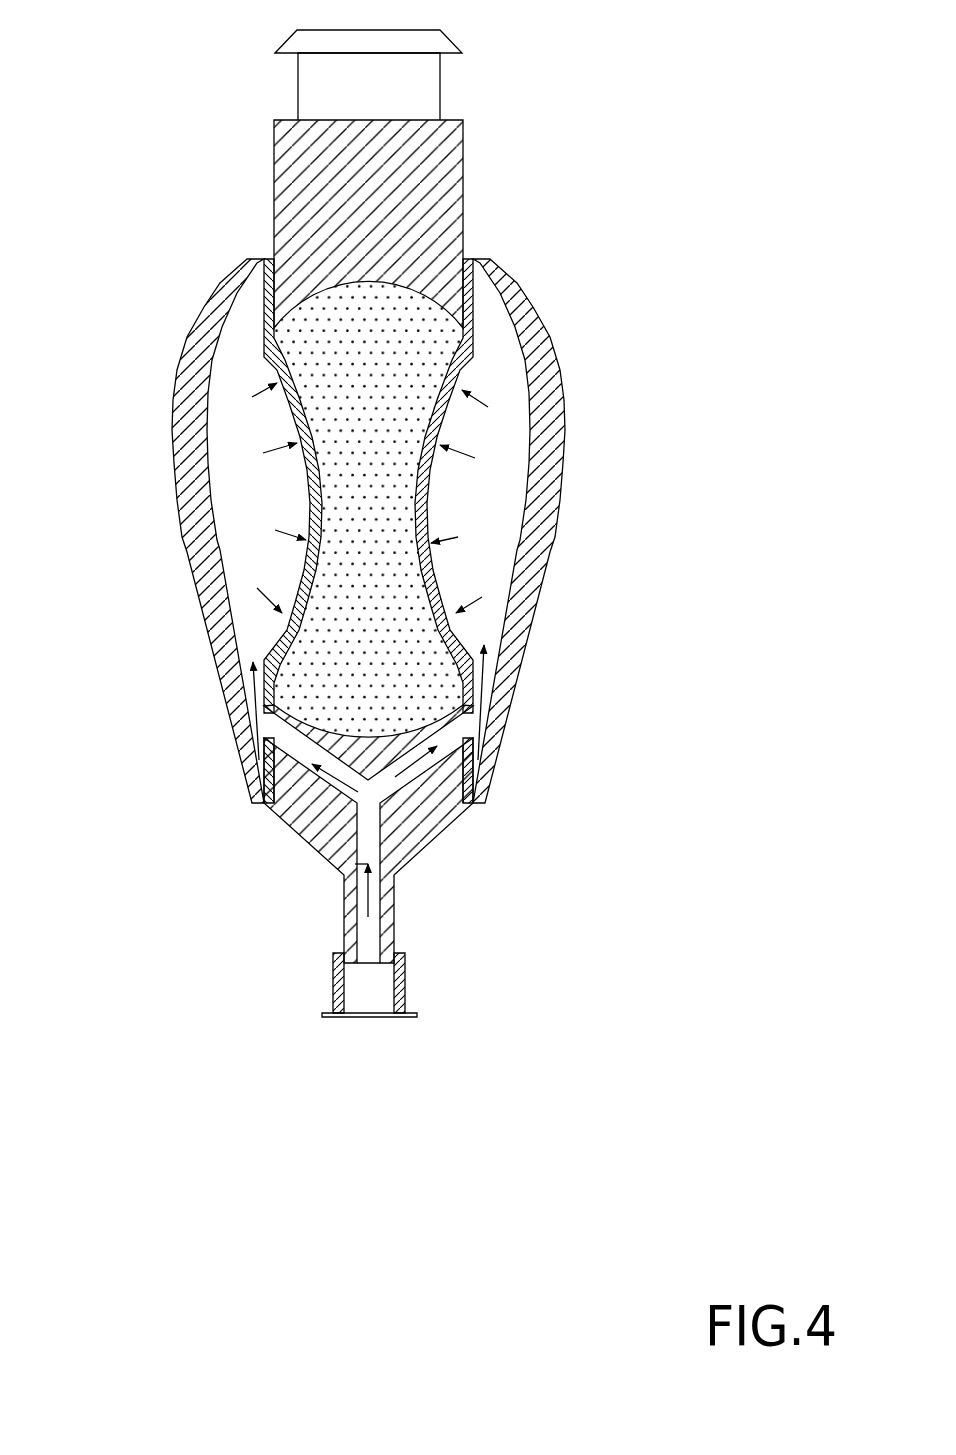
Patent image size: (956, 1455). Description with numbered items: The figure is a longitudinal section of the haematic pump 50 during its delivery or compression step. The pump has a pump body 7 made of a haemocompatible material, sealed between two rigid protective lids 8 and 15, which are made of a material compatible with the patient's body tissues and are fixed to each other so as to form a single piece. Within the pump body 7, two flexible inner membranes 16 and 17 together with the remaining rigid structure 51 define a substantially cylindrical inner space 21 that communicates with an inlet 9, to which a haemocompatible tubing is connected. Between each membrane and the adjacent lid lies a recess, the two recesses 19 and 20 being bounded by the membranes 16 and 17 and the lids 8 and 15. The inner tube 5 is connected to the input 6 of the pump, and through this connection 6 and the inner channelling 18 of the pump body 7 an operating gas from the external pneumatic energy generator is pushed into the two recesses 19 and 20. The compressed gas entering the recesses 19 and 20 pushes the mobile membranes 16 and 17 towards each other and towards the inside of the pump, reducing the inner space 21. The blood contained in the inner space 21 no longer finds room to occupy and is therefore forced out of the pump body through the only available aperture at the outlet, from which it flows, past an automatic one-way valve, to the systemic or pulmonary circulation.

The inner tube 5 is at (348, 982).
The input 6 is at (393, 930).
The pump body 7 is at (470, 166).
The rigid protective lid 8 is at (207, 333).
The inlet 9 is at (423, 73).
The rigid protective lid 15 is at (552, 347).
The flexible inner membrane 16 is at (305, 566).
The flexible inner membrane 17 is at (437, 559).
The inner channelling 18 is at (367, 793).
The recess 19 is at (233, 497).
The recess 20 is at (508, 423).
The inner space 21 is at (367, 330).
The haematic pump 50 is at (560, 266).
The rigid structure 51 is at (298, 223).